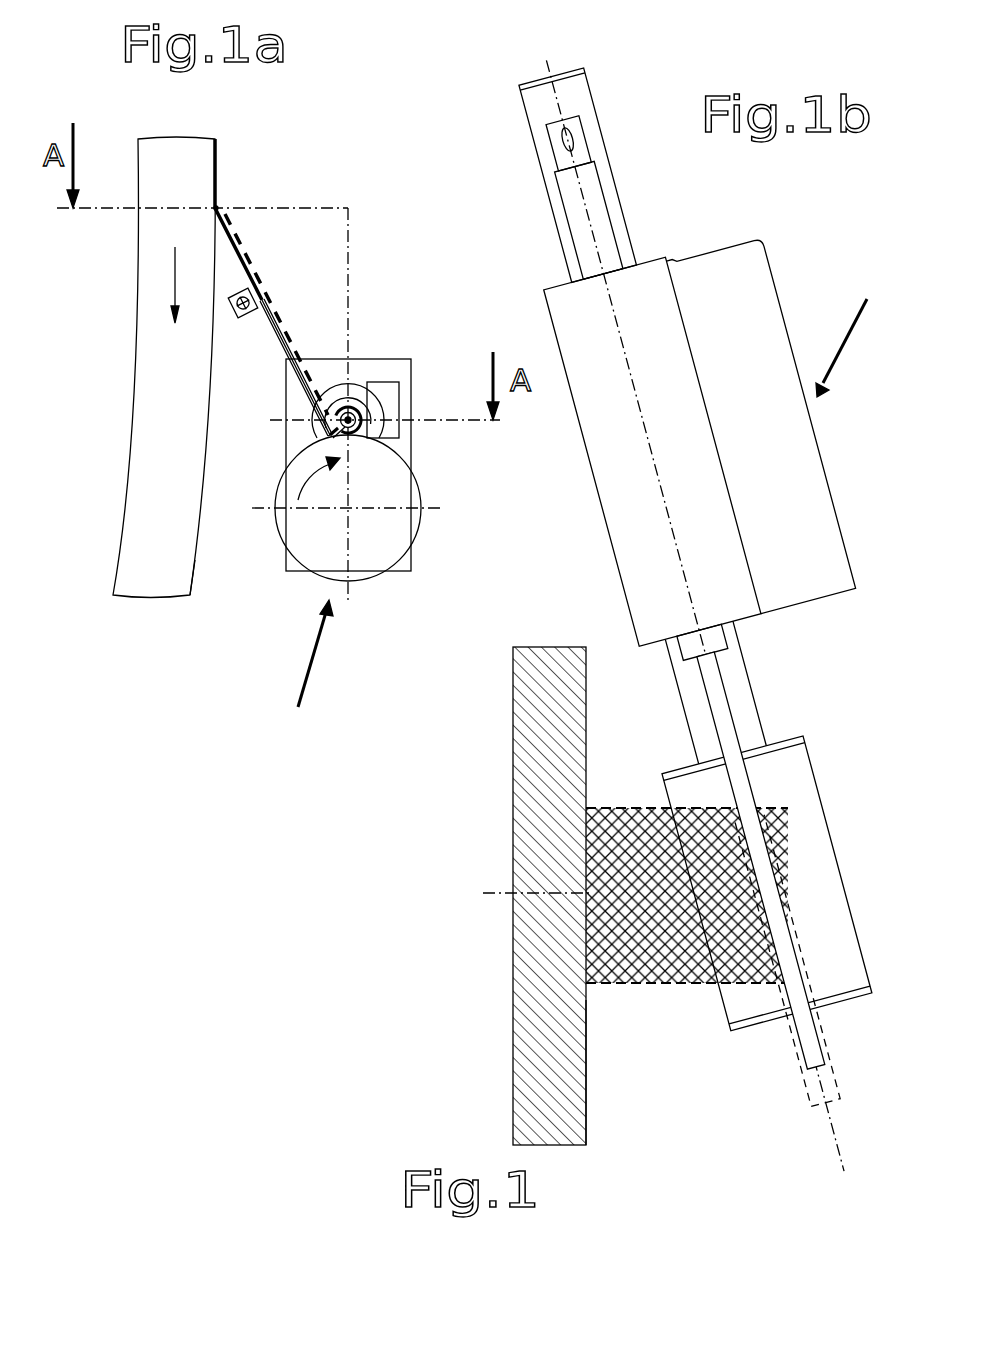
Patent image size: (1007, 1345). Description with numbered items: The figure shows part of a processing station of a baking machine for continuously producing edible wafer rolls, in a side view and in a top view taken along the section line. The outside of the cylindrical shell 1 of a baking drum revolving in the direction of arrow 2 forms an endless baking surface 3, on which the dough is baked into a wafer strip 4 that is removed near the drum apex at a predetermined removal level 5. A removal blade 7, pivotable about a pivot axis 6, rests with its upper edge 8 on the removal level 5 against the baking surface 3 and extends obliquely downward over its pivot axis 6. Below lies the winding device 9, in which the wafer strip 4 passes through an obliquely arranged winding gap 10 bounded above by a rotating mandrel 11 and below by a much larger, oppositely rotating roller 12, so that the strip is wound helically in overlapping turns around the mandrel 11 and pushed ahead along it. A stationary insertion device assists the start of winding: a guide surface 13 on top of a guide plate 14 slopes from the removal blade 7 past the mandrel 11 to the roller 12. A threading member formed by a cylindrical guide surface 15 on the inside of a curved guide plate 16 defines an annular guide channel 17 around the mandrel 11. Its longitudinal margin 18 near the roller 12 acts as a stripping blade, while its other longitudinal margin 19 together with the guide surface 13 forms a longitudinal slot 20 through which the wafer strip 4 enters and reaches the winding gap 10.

In FIG. 1A, the cylindrical shell 1 is at (135, 437).
In FIG. 1B, the cylindrical shell 1 is at (520, 765).
In FIG. 1A, the arrow / running direction 2 is at (175, 292).
In FIG. 1A, the baking surface 3 is at (192, 577).
In FIG. 1B, the baking surface 3 is at (588, 1050).
In FIG. 1A, the wafer strip 4 is at (222, 167).
In FIG. 1B, the wafer strip 4 is at (628, 808).
In FIG. 1A, the removal level 5 is at (330, 207).
In FIG. 1A, the pivot axis 6 is at (237, 315).
In FIG. 1A, the removal blade 7 is at (264, 298).
In FIG. 1A, the upper edge 8 is at (219, 207).
In FIG. 1A, the winding device 9 is at (299, 660).
In FIG. 1B, the winding device 9 is at (711, 439).
In FIG. 1A, the winding gap 10 is at (332, 417).
In FIG. 1A, the mandrel 11 is at (328, 430).
In FIG. 1B, the mandrel 11 is at (827, 1057).
In FIG. 1A, the roller 12 is at (400, 540).
In FIG. 1B, the roller 12 is at (808, 800).
In FIG. 1A, the guide surface 13 is at (283, 335).
In FIG. 1A, the guide plate 14 is at (286, 358).
In FIG. 1A, the cylindrical guide surface 15 is at (367, 413).
In FIG. 1A, the guide plate 16 is at (352, 395).
In FIG. 1A, the annular guide channel 17 is at (367, 418).
In FIG. 1A, the longitudinal margin 18 is at (362, 440).
In FIG. 1A, the longitudinal margin 19 is at (327, 387).
In FIG. 1A, the longitudinal slot 20 is at (320, 398).